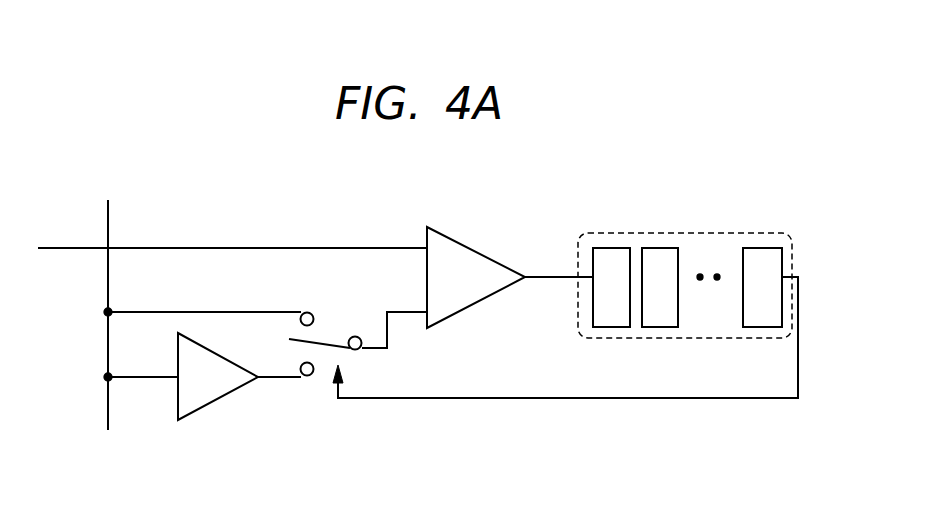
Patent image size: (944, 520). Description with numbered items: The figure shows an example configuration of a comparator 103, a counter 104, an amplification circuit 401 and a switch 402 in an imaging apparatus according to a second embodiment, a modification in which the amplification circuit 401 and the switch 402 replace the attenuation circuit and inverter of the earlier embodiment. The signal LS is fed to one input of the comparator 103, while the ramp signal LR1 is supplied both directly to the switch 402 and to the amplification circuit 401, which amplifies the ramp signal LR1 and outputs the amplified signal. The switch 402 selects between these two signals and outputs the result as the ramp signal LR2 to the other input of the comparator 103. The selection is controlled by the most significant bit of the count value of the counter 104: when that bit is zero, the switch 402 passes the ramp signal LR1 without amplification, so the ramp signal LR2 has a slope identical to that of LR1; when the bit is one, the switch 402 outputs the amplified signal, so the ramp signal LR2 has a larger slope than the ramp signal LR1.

The comparator 103 is at (481, 250).
The counter 104 is at (722, 233).
The amplification circuit 401 is at (223, 396).
The switch 402 is at (328, 357).
The signal LS is at (84, 248).
The ramp signal LR1 is at (108, 408).
The ramp signal LR2 is at (407, 314).